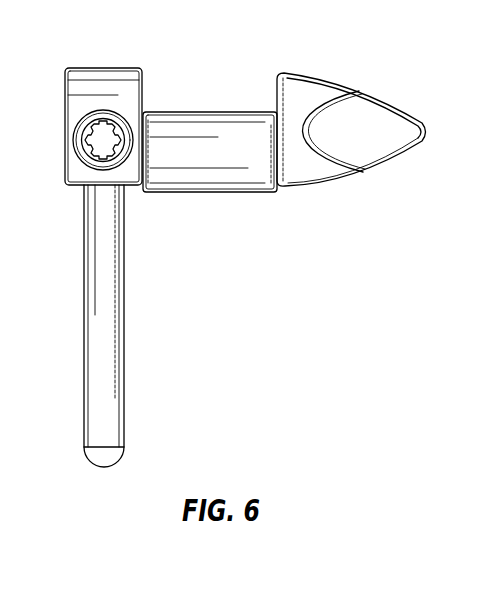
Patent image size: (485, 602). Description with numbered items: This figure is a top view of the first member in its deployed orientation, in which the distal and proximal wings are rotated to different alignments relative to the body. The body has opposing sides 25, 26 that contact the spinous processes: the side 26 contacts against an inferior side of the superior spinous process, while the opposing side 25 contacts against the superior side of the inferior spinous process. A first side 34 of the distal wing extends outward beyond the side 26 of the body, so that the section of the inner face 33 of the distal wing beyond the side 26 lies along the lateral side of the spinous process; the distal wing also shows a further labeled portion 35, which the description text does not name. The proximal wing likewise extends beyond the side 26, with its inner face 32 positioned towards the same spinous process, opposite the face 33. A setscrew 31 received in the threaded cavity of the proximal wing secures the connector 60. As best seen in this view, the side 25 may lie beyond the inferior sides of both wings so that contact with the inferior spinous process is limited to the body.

The side of the body 25 is at (190, 192).
The side of the body 26 is at (202, 112).
The setscrew 31 is at (78, 128).
The inner face of the proximal wing 32 is at (142, 90).
The inner face of the distal wing 33 is at (276, 85).
The first side of the distal wing 34 is at (290, 73).
The tip lower edge 35 is at (303, 187).
The connector 60 is at (107, 375).